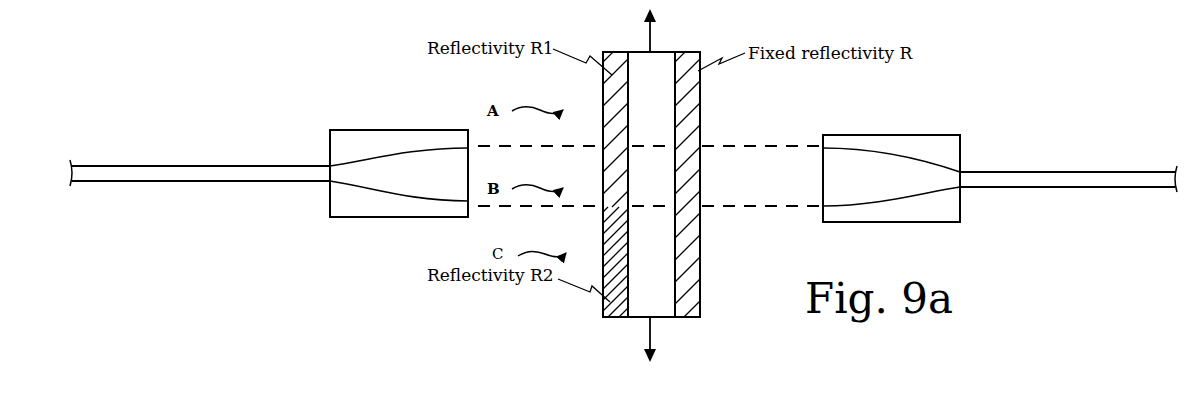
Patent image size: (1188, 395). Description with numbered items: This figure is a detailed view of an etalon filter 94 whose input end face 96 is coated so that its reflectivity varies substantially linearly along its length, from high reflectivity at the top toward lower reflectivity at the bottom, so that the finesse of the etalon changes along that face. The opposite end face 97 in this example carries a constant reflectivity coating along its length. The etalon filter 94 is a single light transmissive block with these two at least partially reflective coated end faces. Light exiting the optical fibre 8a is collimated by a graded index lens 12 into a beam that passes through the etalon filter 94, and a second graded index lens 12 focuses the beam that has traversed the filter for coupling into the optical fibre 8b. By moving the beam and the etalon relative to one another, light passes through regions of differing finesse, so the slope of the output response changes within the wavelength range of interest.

The optical fibre 8a is at (200, 170).
The optical fibre 8b is at (1060, 175).
The graded index (GRIN) lens 12 is at (373, 140).
The etalon filter 94 is at (655, 44).
The input end face 96 is at (603, 217).
The opposite end face 97 is at (700, 160).